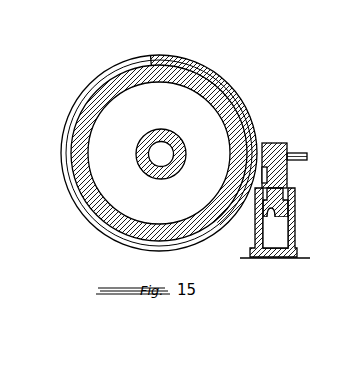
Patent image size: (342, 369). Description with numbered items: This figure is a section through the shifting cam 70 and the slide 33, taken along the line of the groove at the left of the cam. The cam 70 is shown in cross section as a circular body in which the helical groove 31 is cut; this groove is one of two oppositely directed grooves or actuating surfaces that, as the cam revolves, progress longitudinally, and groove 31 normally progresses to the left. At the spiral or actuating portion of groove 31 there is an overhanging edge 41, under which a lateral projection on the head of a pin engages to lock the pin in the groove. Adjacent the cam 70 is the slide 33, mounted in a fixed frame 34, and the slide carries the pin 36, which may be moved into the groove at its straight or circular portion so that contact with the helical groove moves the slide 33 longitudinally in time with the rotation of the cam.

The shifting cam 70 is at (200, 67).
The overhanging edge 41 is at (83, 97).
The helical groove 31 is at (74, 125).
The pin 36 is at (299, 153).
The slide 33 is at (288, 178).
The fixed frame 34 is at (294, 233).